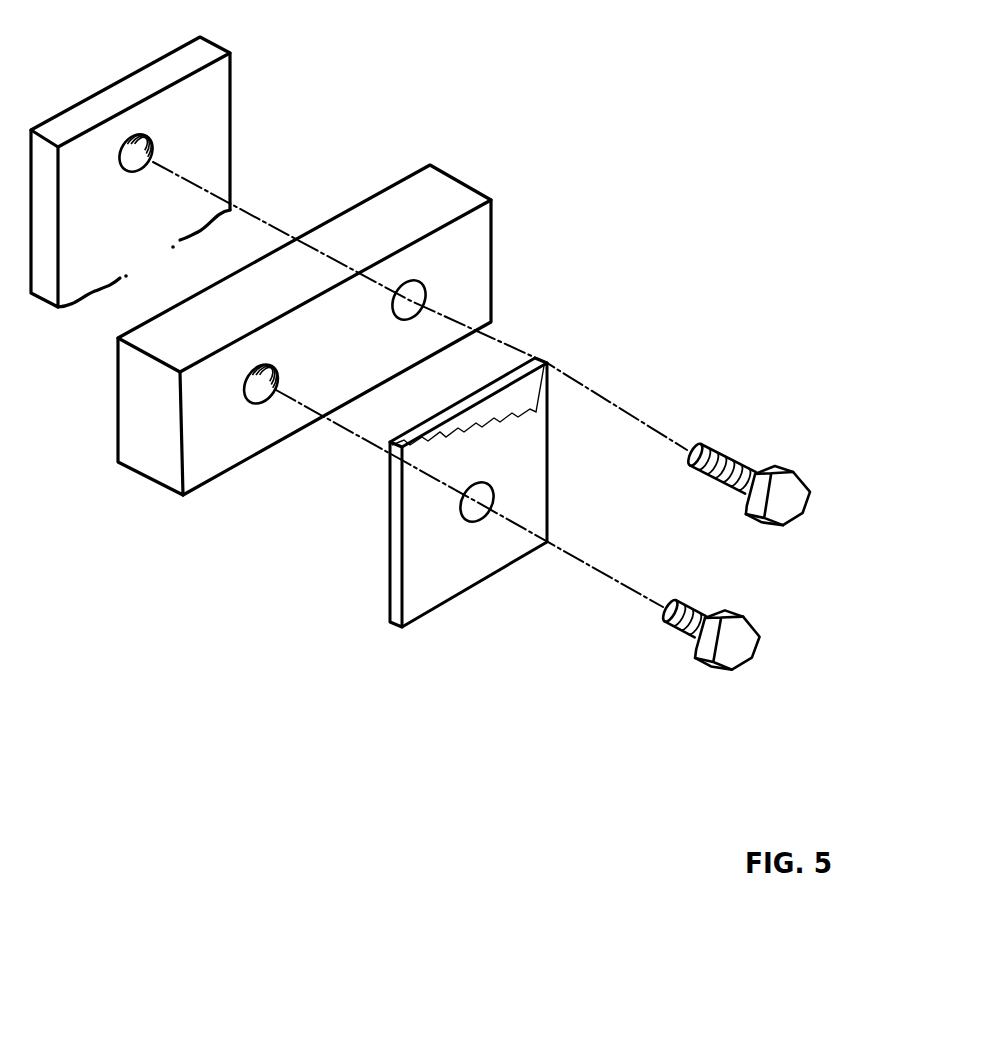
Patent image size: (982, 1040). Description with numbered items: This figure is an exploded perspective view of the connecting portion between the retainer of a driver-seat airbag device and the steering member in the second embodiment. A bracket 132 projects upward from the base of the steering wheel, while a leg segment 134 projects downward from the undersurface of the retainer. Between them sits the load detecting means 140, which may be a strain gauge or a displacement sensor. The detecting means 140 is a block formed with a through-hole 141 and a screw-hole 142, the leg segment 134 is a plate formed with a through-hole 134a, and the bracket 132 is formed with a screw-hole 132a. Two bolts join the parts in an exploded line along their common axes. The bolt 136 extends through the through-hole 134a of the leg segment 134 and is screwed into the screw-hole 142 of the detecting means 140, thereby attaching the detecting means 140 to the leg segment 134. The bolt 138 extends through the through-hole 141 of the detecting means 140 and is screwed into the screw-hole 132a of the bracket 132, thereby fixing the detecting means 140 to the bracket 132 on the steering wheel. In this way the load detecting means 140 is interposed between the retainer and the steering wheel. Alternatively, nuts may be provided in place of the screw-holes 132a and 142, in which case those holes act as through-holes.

The bracket 132 is at (208, 93).
The screw-hole 132a is at (120, 148).
The load detecting means 140 is at (443, 183).
The through-hole 141 is at (423, 287).
The screw-hole 142 is at (263, 401).
The leg segment 134 is at (440, 580).
The through-hole 134a is at (488, 487).
The bolt 138 is at (800, 488).
The bolt 136 is at (755, 630).